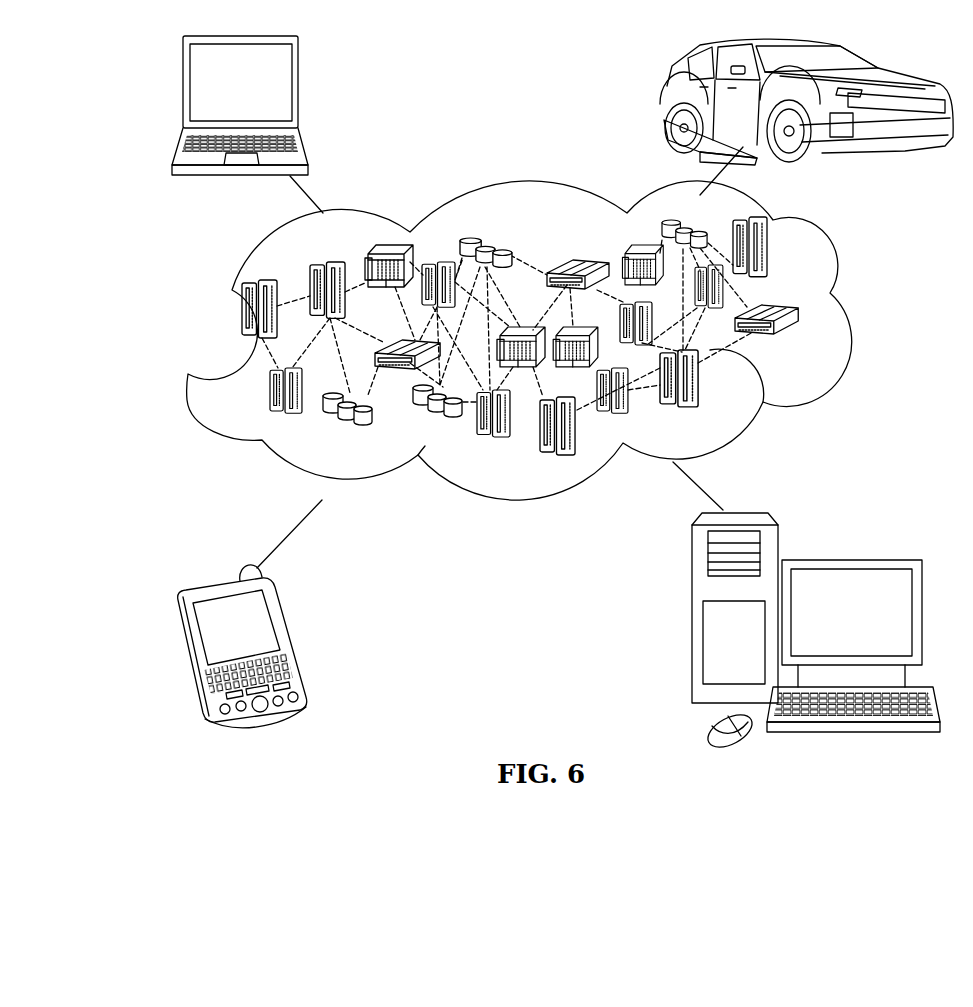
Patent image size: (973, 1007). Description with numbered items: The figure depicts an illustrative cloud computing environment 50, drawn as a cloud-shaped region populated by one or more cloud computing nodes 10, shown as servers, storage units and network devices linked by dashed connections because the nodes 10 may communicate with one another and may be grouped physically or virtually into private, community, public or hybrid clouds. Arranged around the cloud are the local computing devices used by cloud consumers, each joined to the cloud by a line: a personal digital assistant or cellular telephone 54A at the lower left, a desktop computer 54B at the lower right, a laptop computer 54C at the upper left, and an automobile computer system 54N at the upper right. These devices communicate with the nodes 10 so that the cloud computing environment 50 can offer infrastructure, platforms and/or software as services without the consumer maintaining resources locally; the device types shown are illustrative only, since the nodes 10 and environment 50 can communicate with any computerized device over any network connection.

The cloud computing nodes 10 is at (808, 347).
The cloud computing environment 50 is at (848, 322).
The personal digital assistant or cellular telephone 54A is at (292, 641).
The desktop computer 54B is at (850, 558).
The laptop computer 54C is at (298, 89).
The automobile computer system 54N is at (665, 100).